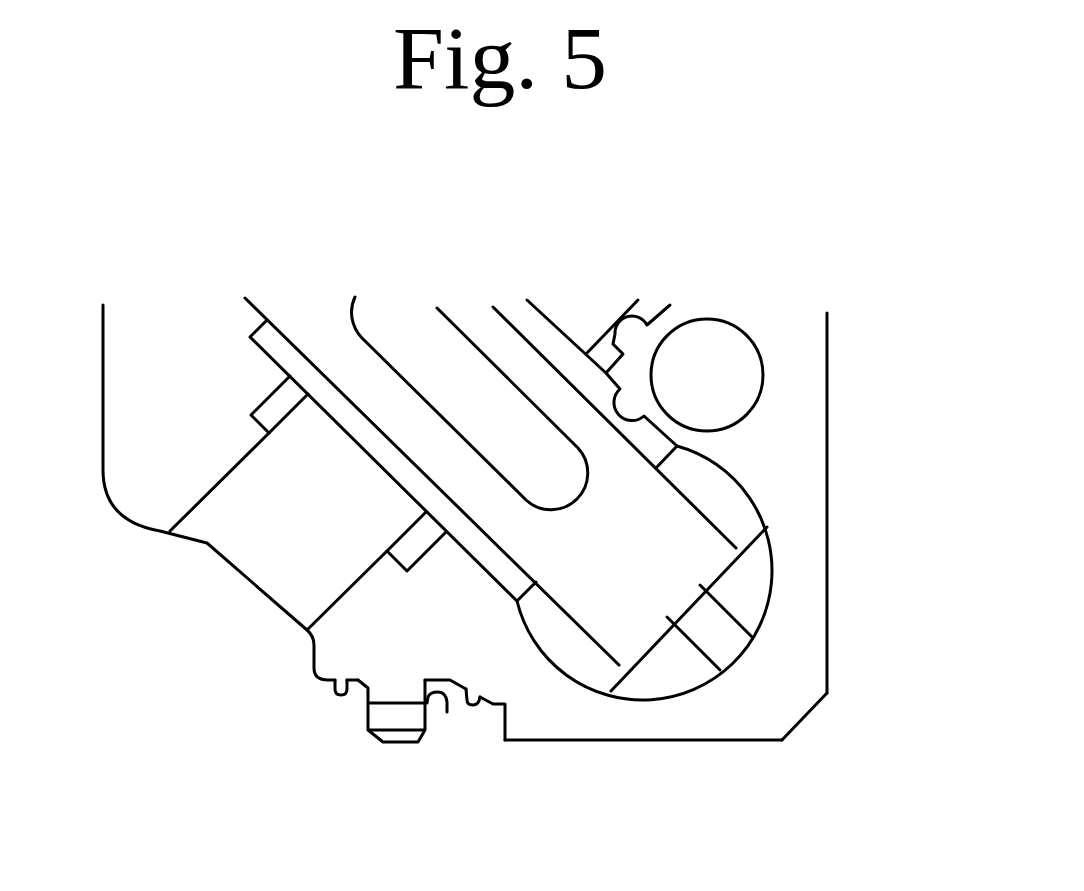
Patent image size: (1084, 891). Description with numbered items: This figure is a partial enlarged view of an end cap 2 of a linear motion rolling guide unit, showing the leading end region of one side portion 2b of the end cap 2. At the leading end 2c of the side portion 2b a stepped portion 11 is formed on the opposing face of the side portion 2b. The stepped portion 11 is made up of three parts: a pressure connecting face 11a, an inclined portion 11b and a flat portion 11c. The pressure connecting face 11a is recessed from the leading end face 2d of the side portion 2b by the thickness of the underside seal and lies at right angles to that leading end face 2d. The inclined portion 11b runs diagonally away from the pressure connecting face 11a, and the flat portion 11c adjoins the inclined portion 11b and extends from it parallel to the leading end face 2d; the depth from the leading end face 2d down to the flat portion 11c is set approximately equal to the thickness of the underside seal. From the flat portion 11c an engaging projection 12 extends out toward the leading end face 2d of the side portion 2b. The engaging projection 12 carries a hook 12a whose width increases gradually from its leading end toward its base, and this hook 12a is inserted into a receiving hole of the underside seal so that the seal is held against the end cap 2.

The end cap 2 is at (498, 508).
The side portion 2b is at (797, 338).
The leading end 2c is at (680, 717).
The leading end face 2d is at (735, 742).
The stepped portion 11 is at (449, 741).
The pressure connecting face 11a is at (500, 740).
The inclined portion 11b is at (478, 690).
The flat portion 11c is at (347, 680).
The engaging projection 12 is at (370, 751).
The hook 12a is at (447, 712).